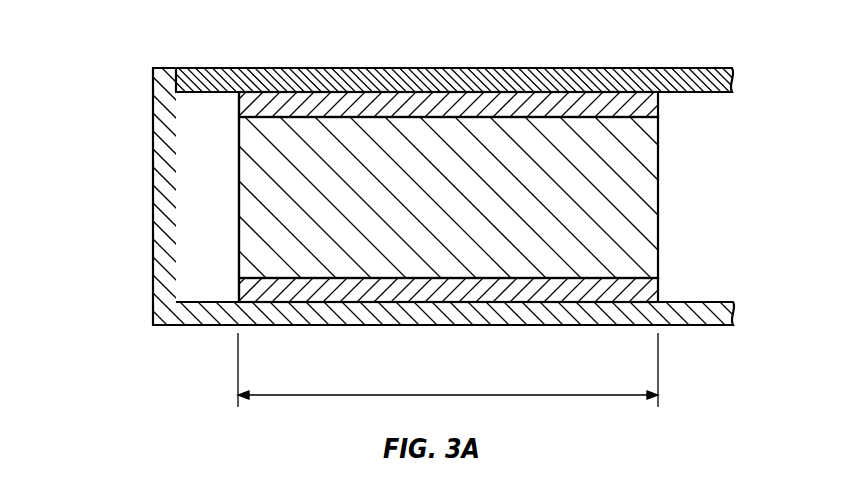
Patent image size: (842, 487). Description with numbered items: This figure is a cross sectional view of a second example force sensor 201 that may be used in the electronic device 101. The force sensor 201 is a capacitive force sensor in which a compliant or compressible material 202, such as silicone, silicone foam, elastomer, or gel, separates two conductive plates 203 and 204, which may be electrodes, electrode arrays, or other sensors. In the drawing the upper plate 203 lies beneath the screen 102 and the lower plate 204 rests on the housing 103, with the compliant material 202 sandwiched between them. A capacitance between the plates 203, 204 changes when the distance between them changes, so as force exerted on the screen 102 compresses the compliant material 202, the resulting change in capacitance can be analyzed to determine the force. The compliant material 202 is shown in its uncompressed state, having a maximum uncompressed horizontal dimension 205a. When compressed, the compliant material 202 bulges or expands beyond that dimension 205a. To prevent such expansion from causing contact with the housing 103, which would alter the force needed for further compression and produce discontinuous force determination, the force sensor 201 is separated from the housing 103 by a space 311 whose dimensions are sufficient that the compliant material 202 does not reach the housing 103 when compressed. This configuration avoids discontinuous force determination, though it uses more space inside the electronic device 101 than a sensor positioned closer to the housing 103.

The electronic device 101 is at (98, 161).
The screen 102 is at (670, 68).
The housing 103 is at (683, 327).
The force sensor 201 is at (430, 197).
The compliant material 202 is at (658, 200).
The conductive plate 203 is at (658, 104).
The conductive plate 204 is at (658, 289).
The maximum uncompressed horizontal dimension 205a is at (449, 393).
The space 311 is at (209, 105).